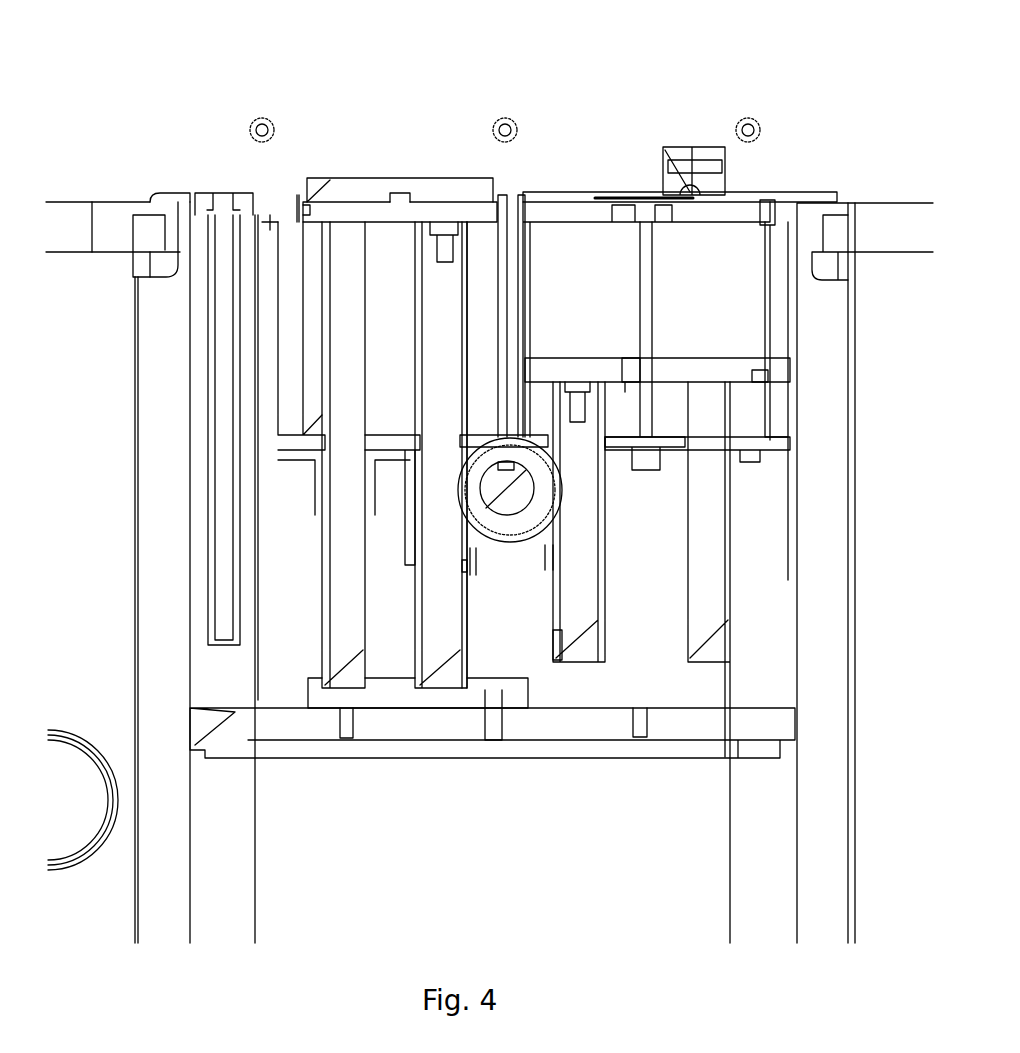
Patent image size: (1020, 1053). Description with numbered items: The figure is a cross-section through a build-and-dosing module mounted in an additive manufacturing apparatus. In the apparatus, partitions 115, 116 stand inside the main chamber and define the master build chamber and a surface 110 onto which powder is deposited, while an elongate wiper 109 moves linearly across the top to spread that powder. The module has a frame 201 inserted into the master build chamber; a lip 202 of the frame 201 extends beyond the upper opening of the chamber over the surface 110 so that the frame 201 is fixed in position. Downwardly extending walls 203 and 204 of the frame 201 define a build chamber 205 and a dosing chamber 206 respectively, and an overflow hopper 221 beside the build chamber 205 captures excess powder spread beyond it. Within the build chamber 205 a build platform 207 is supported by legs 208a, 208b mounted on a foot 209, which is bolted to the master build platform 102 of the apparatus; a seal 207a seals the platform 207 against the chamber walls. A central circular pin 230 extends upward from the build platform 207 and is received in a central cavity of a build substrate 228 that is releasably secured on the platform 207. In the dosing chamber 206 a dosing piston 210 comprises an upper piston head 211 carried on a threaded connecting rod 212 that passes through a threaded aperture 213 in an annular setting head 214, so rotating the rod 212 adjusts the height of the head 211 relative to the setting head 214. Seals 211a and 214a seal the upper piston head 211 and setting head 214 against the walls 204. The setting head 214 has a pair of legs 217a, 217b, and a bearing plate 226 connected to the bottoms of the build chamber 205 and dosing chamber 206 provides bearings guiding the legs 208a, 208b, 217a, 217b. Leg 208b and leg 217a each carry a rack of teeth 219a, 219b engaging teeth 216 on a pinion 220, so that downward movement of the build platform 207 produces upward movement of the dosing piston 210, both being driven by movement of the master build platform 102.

The master build platform 102 is at (236, 727).
The elongate wiper 109 is at (679, 143).
The surface 110 is at (896, 196).
The partition 115 is at (896, 242).
The partition 116 is at (140, 373).
The frame 201 is at (271, 194).
The lip 202 is at (163, 190).
The wall 203 is at (288, 384).
The wall 204 is at (775, 323).
The build chamber 205 is at (494, 322).
The dosing chamber 206 is at (528, 300).
The build platform 207 is at (350, 208).
The seal 207a is at (302, 205).
The leg 208a is at (344, 634).
The leg 208b is at (443, 636).
The foot 209 is at (512, 696).
The dosing piston 210 is at (758, 163).
The upper piston head 211 is at (585, 214).
The seal 211a is at (767, 196).
The threaded connecting rod 212 is at (650, 345).
The threaded aperture 213 is at (629, 369).
The annular setting head 214 is at (731, 387).
The seal 214a is at (760, 370).
The teeth 216 is at (552, 532).
The leg 217a is at (578, 650).
The leg 217b is at (707, 650).
The rack of teeth 219a is at (476, 578).
The rack of teeth 219b is at (551, 648).
The pinion 220 is at (519, 494).
The overflow hopper 221 is at (212, 313).
The bearing plate 226 is at (746, 453).
The build substrate 228 is at (368, 178).
The pin 230 is at (398, 198).